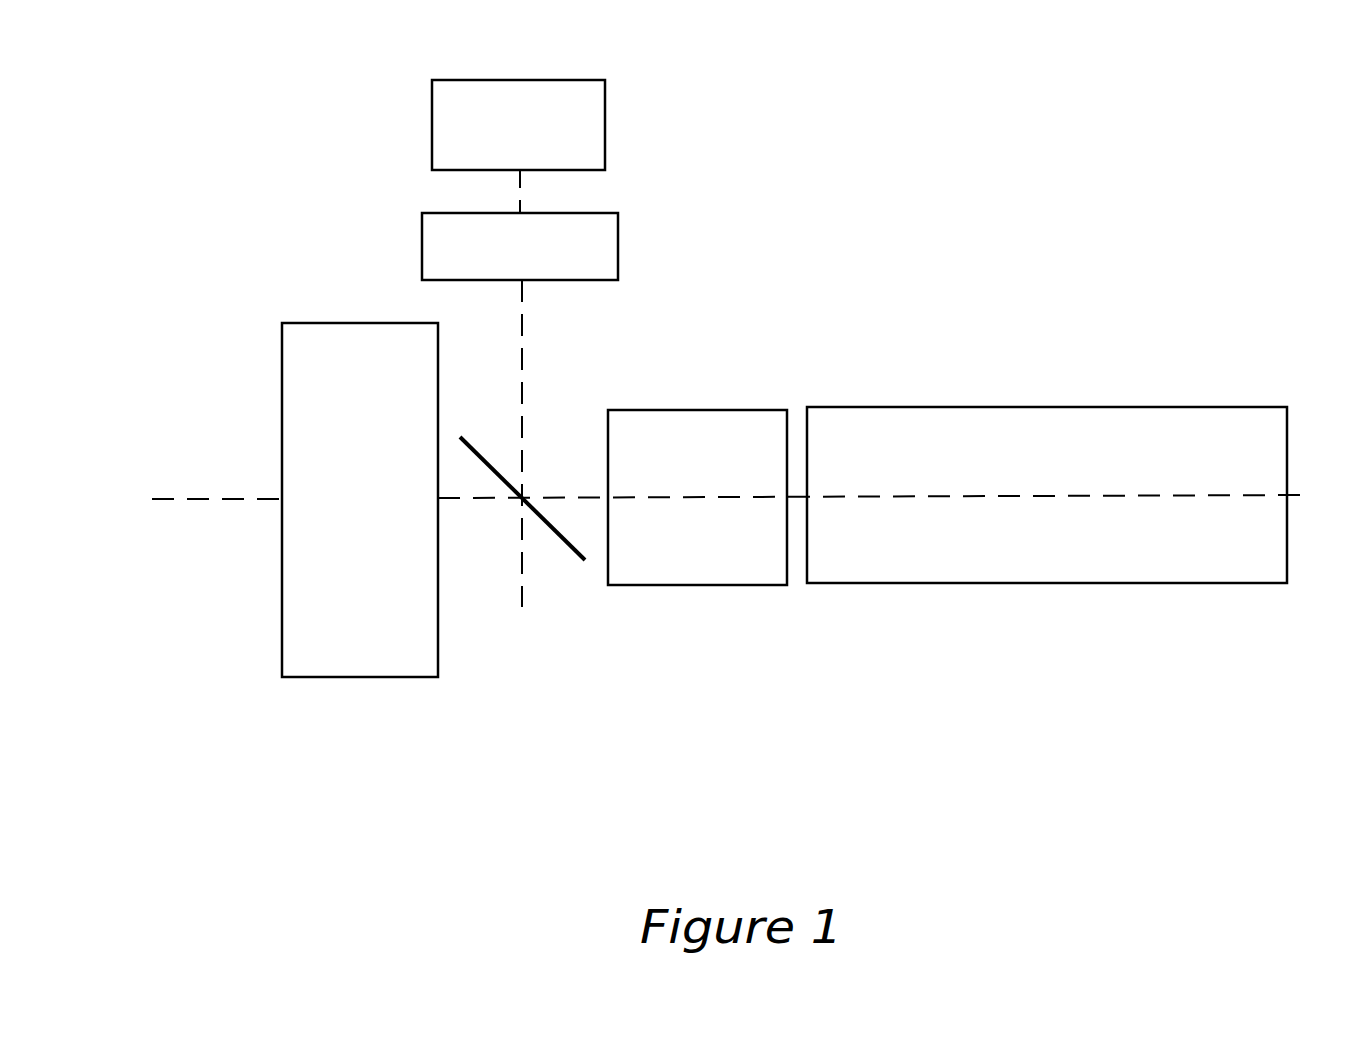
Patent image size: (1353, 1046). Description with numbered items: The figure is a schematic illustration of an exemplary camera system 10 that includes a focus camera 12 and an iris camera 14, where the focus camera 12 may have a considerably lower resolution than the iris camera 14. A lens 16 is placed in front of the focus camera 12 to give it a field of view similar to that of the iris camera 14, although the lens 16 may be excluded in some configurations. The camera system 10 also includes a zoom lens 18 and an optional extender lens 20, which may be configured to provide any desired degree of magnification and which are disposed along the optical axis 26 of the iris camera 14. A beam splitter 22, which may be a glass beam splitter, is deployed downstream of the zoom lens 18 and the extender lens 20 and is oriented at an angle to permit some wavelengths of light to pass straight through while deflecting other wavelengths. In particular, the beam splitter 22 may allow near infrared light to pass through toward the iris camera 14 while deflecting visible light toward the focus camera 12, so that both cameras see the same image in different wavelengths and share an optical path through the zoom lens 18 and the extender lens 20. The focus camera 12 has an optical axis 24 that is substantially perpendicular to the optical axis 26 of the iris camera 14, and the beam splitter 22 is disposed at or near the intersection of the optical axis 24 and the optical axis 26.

The camera system 10 is at (180, 122).
The focus camera 12 is at (441, 115).
The iris camera 14 is at (300, 397).
The lens 16 is at (432, 249).
The zoom lens 18 is at (1030, 418).
The extender lens 20 is at (697, 420).
The beam splitter 22 is at (577, 553).
The optical axis 24 is at (522, 342).
The optical axis 26 is at (473, 500).